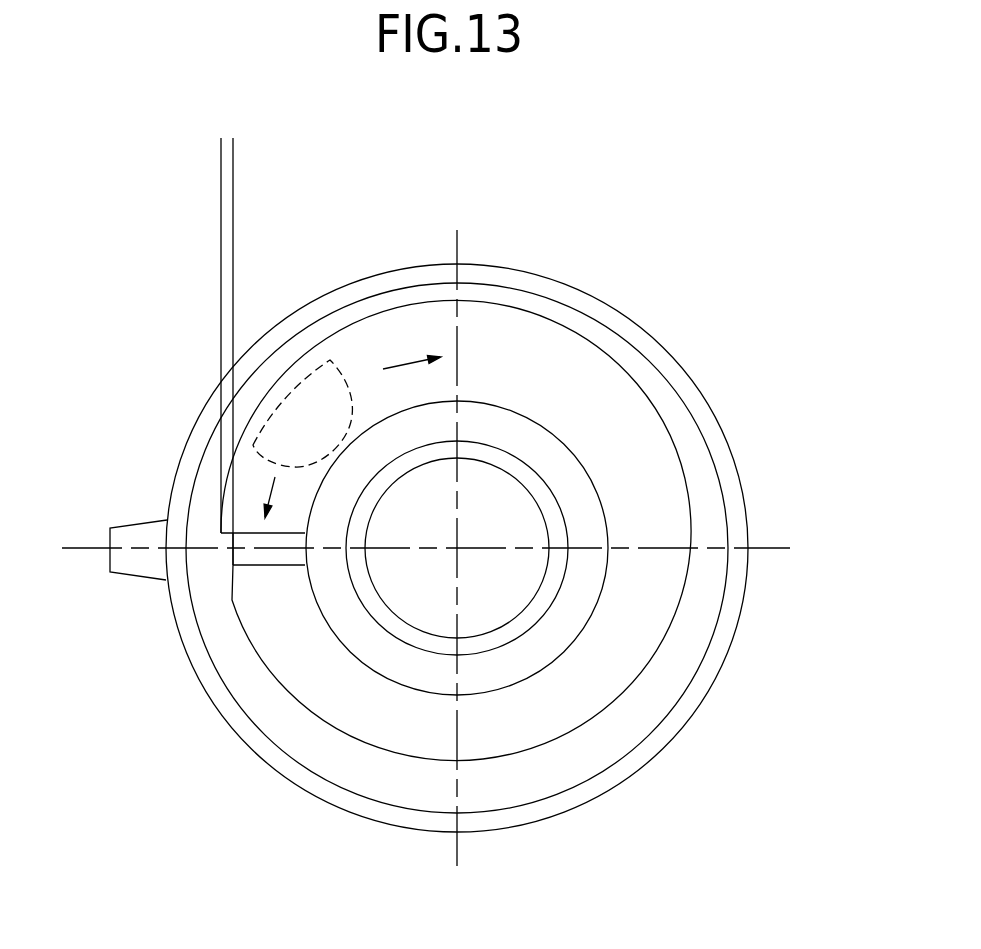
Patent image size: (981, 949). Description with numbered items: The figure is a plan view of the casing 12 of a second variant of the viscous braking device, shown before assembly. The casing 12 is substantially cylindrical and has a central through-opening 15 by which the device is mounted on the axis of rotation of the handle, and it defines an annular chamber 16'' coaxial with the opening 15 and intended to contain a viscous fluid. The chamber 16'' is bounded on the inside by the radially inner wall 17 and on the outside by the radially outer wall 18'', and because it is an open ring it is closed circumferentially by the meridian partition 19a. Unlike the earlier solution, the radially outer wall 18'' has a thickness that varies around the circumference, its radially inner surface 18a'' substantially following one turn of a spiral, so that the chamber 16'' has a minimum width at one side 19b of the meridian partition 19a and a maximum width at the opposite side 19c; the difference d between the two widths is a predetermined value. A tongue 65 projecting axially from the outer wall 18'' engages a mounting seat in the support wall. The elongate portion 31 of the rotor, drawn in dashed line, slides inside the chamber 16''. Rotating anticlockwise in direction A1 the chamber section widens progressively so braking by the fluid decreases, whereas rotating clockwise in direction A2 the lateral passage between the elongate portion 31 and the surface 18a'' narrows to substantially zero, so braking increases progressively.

The casing 12 is at (537, 274).
The radially outer wall 18'' is at (457, 525).
The annular chamber 16'' is at (505, 530).
The radially inner surface 18a'' is at (759, 457).
The radially inner wall 17 is at (405, 438).
The central through-opening 15 is at (528, 490).
The meridian partition 19a is at (277, 552).
The side of the meridian partition 19b is at (260, 565).
The opposite side of the meridian partition 19c is at (253, 532).
The elongate portion 31 is at (337, 372).
The tongue 65 is at (146, 576).
The difference between maximum and minimum width d is at (268, 138).
The direction of rotation A1 is at (265, 498).
The direction of rotation A2 is at (408, 365).